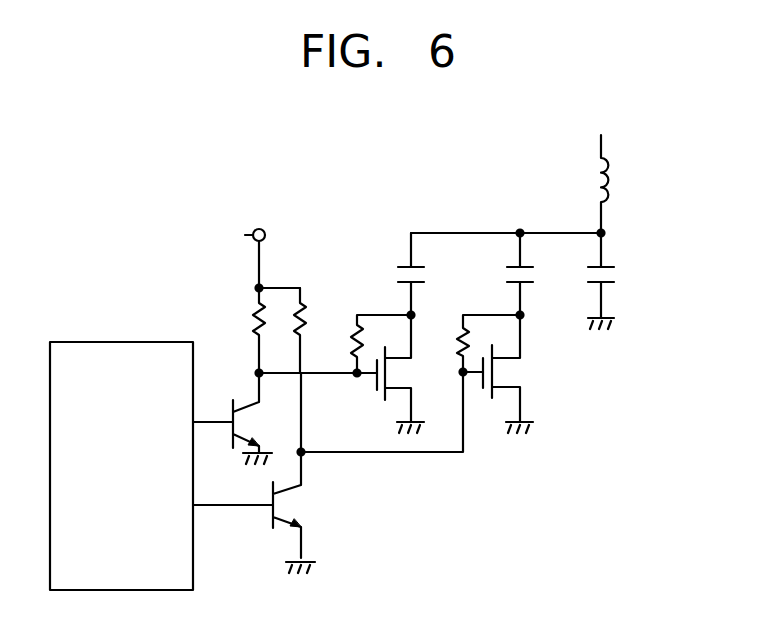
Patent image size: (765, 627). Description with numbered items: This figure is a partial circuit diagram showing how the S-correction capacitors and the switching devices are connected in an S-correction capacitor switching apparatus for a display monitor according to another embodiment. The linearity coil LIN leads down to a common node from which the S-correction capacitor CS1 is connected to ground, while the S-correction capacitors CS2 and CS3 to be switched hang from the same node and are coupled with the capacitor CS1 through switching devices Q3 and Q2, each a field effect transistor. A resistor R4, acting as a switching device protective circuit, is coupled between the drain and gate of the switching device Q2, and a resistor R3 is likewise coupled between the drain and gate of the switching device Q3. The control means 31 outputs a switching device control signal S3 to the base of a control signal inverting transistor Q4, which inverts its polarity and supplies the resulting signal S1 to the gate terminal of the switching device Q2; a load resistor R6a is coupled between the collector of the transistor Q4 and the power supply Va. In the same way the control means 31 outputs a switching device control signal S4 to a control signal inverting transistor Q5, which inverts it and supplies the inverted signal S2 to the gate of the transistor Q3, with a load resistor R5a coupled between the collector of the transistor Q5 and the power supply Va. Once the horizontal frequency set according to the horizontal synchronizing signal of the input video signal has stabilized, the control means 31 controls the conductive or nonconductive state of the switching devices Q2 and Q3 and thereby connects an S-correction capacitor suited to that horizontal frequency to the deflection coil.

The control means 31 is at (135, 342).
The power supply Va is at (236, 254).
The load resistor R6a is at (231, 330).
The load resistor R5a is at (314, 332).
The resistor (switching device protective circuit) R4 is at (372, 343).
The resistor (switching device protective circuit) R3 is at (466, 339).
The switching device control signal S1 is at (317, 360).
The switching device control signal S2 is at (381, 414).
The switching device control signal S3 is at (213, 403).
The switching device control signal S4 is at (233, 490).
The switching device Q2 is at (413, 374).
The switching device Q3 is at (522, 374).
The control signal inverting transistor Q4 is at (263, 418).
The control signal inverting transistor Q5 is at (306, 512).
The S-correction capacitor CS1 is at (628, 281).
The S-correction capacitor CS2 is at (542, 274).
The S-correction capacitor CS3 is at (437, 274).
The linearity coil LIN is at (575, 184).